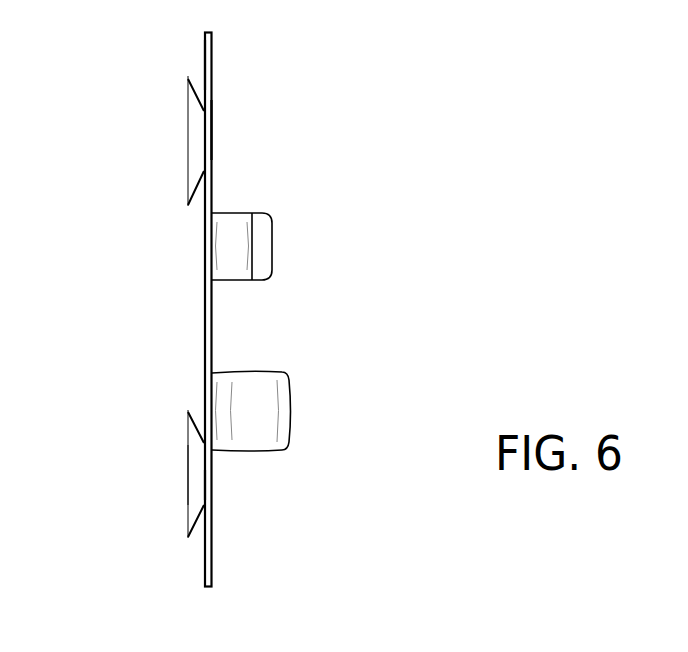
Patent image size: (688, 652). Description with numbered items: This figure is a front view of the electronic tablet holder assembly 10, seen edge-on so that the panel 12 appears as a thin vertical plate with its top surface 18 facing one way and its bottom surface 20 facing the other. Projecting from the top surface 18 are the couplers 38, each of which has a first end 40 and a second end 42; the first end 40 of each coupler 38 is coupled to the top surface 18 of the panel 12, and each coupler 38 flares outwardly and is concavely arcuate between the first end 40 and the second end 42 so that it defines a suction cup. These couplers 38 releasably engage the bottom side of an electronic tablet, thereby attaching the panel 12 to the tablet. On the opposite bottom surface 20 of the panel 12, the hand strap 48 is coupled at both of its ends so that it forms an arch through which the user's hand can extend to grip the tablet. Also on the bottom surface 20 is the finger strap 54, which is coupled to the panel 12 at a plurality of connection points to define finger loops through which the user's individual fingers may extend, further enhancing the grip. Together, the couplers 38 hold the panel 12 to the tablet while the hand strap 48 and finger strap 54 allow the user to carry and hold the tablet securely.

The electronic tablet holder assembly 10 is at (322, 98).
The panel 12 is at (212, 45).
The top surface 18 is at (204, 62).
The bottom surface 20 is at (212, 128).
The coupler 38 is at (188, 188).
The first end 40 is at (204, 487).
The second end 42 is at (188, 483).
The hand strap 48 is at (290, 412).
The finger strap 54 is at (275, 245).